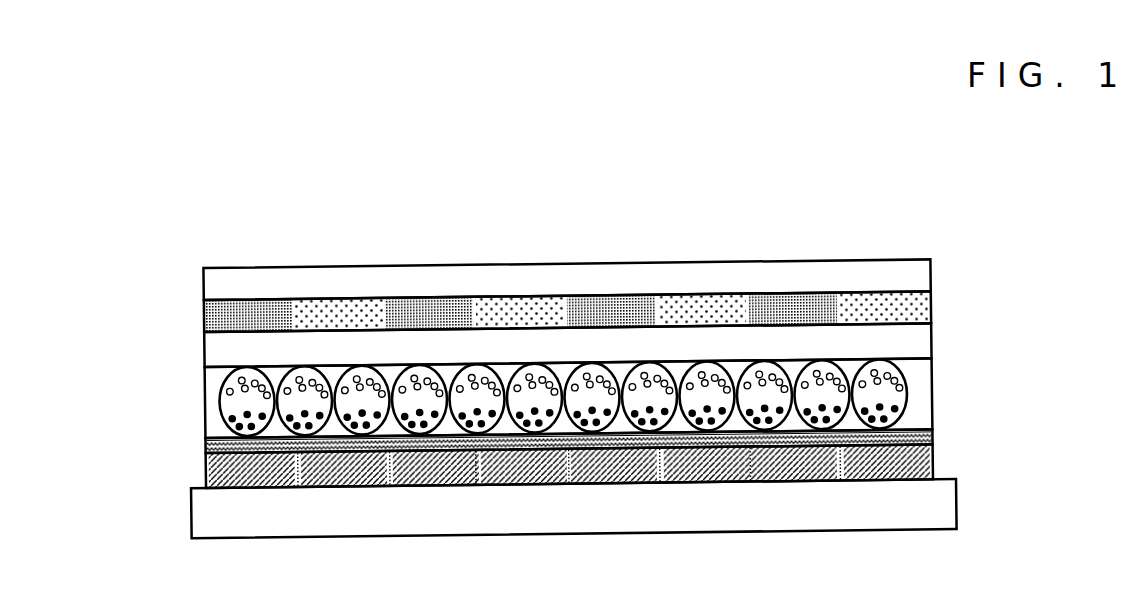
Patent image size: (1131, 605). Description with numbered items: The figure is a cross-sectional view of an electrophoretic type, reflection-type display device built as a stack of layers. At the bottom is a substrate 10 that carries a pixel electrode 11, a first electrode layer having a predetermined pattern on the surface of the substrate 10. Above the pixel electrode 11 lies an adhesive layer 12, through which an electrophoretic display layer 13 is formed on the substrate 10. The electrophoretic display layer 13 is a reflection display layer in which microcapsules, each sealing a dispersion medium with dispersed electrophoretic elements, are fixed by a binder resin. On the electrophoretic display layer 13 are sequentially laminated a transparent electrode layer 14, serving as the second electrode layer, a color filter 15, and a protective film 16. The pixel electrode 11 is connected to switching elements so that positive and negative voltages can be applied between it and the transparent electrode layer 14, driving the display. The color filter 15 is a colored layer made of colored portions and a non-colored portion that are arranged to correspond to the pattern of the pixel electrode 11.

The substrate 10 is at (948, 507).
The pixel electrode 11 is at (932, 464).
The adhesive layer 12 is at (930, 436).
The electrophoretic display layer 13 is at (918, 376).
The transparent electrode layer 14 is at (918, 342).
The color filter 15 is at (918, 309).
The protective film 16 is at (917, 277).